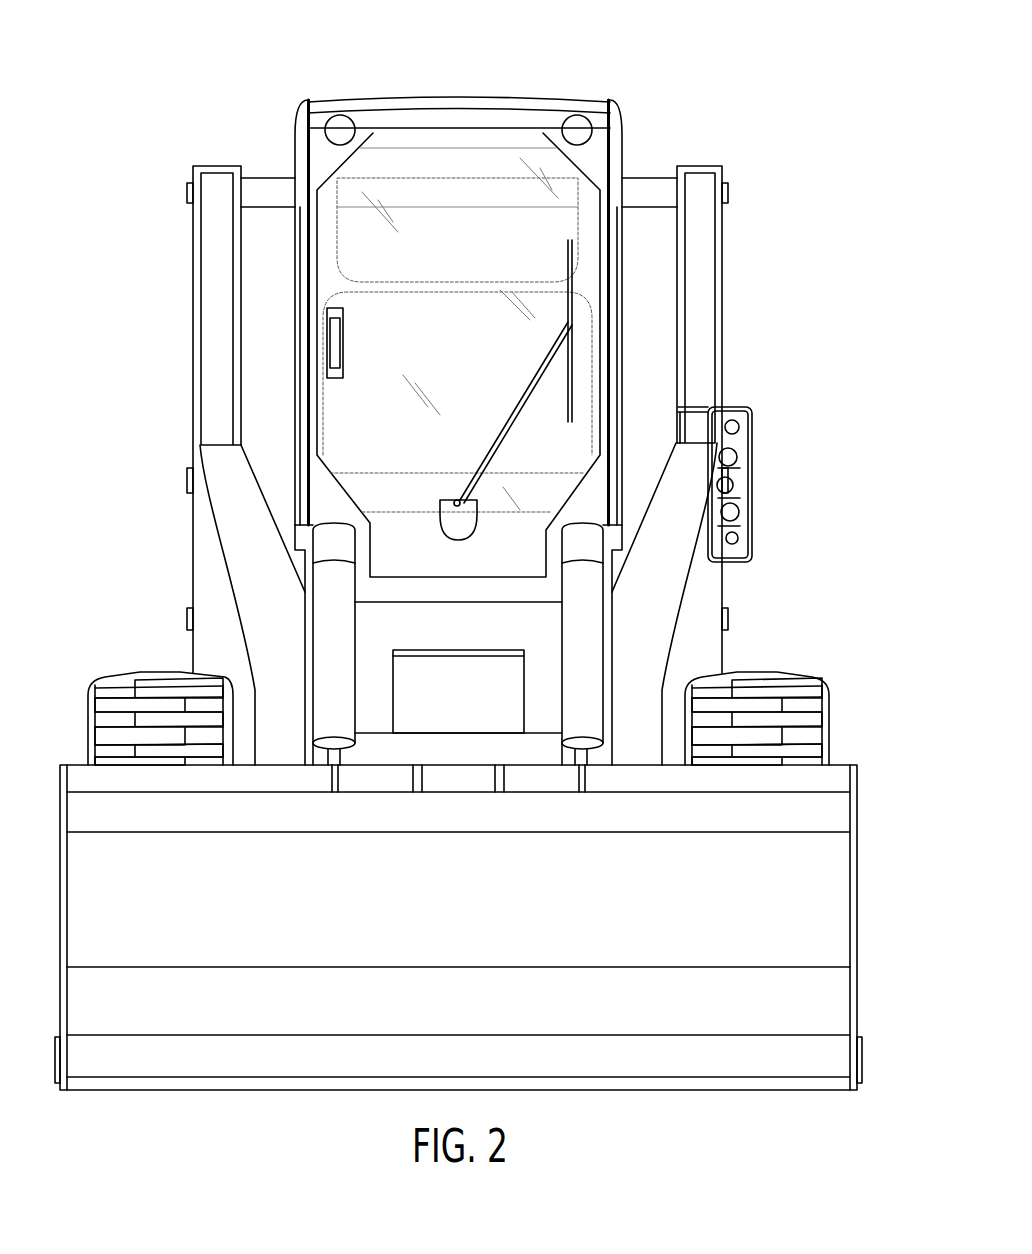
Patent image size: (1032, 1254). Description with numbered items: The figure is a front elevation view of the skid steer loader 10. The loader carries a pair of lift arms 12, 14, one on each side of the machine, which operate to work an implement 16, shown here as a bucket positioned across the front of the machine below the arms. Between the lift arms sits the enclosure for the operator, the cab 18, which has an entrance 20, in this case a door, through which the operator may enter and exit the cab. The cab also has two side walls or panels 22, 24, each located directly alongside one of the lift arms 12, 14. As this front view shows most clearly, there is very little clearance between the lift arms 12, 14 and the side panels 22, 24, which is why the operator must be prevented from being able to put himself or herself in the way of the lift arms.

The skid steer loader 10 is at (777, 110).
The lift arm 12 is at (222, 303).
The lift arm 14 is at (712, 288).
The implement 16 is at (833, 903).
The cab 18 is at (427, 88).
The entrance 20 is at (488, 395).
The side panel 22 is at (300, 162).
The side panel 24 is at (624, 162).